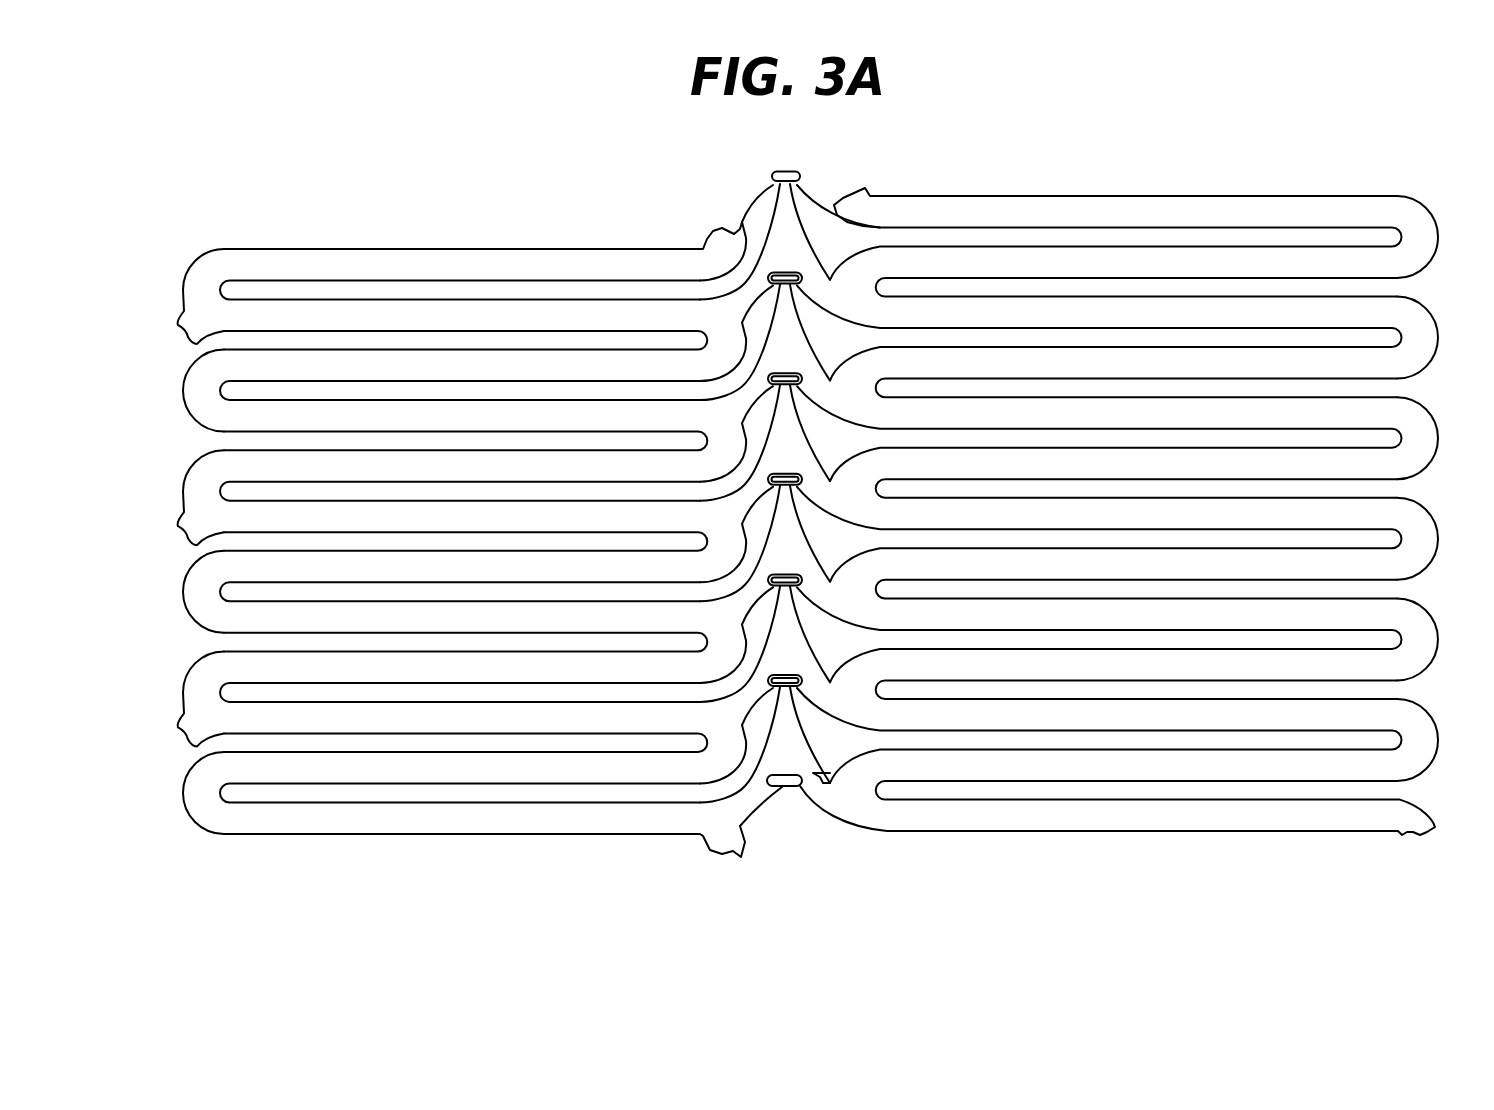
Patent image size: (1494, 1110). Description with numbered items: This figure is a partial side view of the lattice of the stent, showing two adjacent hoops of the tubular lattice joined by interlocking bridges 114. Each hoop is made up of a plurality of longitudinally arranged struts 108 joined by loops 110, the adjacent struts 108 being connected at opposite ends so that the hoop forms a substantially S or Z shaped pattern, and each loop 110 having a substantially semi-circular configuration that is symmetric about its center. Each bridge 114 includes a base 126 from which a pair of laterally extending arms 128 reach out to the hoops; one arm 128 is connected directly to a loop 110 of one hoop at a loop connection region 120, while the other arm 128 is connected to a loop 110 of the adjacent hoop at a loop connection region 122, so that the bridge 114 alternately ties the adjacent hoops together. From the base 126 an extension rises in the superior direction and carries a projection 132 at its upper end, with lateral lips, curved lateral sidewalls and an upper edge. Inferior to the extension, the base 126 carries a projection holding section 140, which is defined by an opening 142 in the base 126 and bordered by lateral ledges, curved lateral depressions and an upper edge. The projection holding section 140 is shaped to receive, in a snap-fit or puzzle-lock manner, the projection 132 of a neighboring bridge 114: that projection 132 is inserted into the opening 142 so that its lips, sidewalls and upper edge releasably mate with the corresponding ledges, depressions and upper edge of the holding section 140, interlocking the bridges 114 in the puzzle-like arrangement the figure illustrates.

The strut 108 is at (1308, 252).
The loop 110 is at (1428, 432).
The interlocking bridge 114 is at (818, 800).
The loop connection region 120 is at (747, 305).
The loop connection region 122 is at (832, 295).
The base 126 is at (815, 777).
The laterally extending arm 128 is at (725, 310).
The projection 132 is at (787, 265).
The projection holding section 140 is at (782, 787).
The opening 142 is at (788, 790).